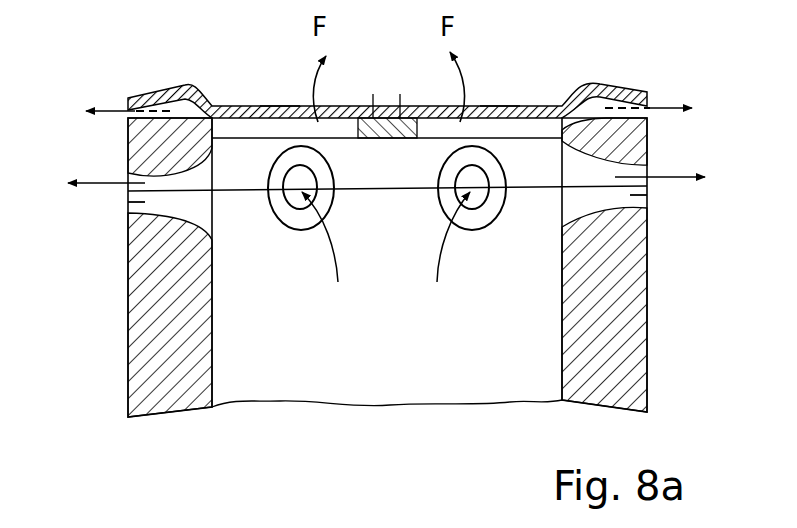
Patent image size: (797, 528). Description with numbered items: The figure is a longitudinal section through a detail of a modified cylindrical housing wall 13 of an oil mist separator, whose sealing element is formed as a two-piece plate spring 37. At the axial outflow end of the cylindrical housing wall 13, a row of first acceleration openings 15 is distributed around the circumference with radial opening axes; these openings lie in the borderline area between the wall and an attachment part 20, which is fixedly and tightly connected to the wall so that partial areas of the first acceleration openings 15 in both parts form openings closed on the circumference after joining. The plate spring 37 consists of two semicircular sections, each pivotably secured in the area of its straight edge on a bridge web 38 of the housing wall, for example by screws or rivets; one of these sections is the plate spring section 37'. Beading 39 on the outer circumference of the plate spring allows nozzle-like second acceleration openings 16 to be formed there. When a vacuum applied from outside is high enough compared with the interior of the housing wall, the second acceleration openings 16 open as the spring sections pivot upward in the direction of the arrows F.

The cylindrical housing wall 13 is at (615, 325).
The first acceleration openings 15 is at (145, 202).
The second acceleration openings 16 is at (132, 115).
The attachment part 20 is at (630, 144).
The plate spring 37 is at (387, 74).
The first plate spring section 37' is at (272, 68).
The bridge web 38 is at (387, 138).
The beading 39 is at (190, 88).